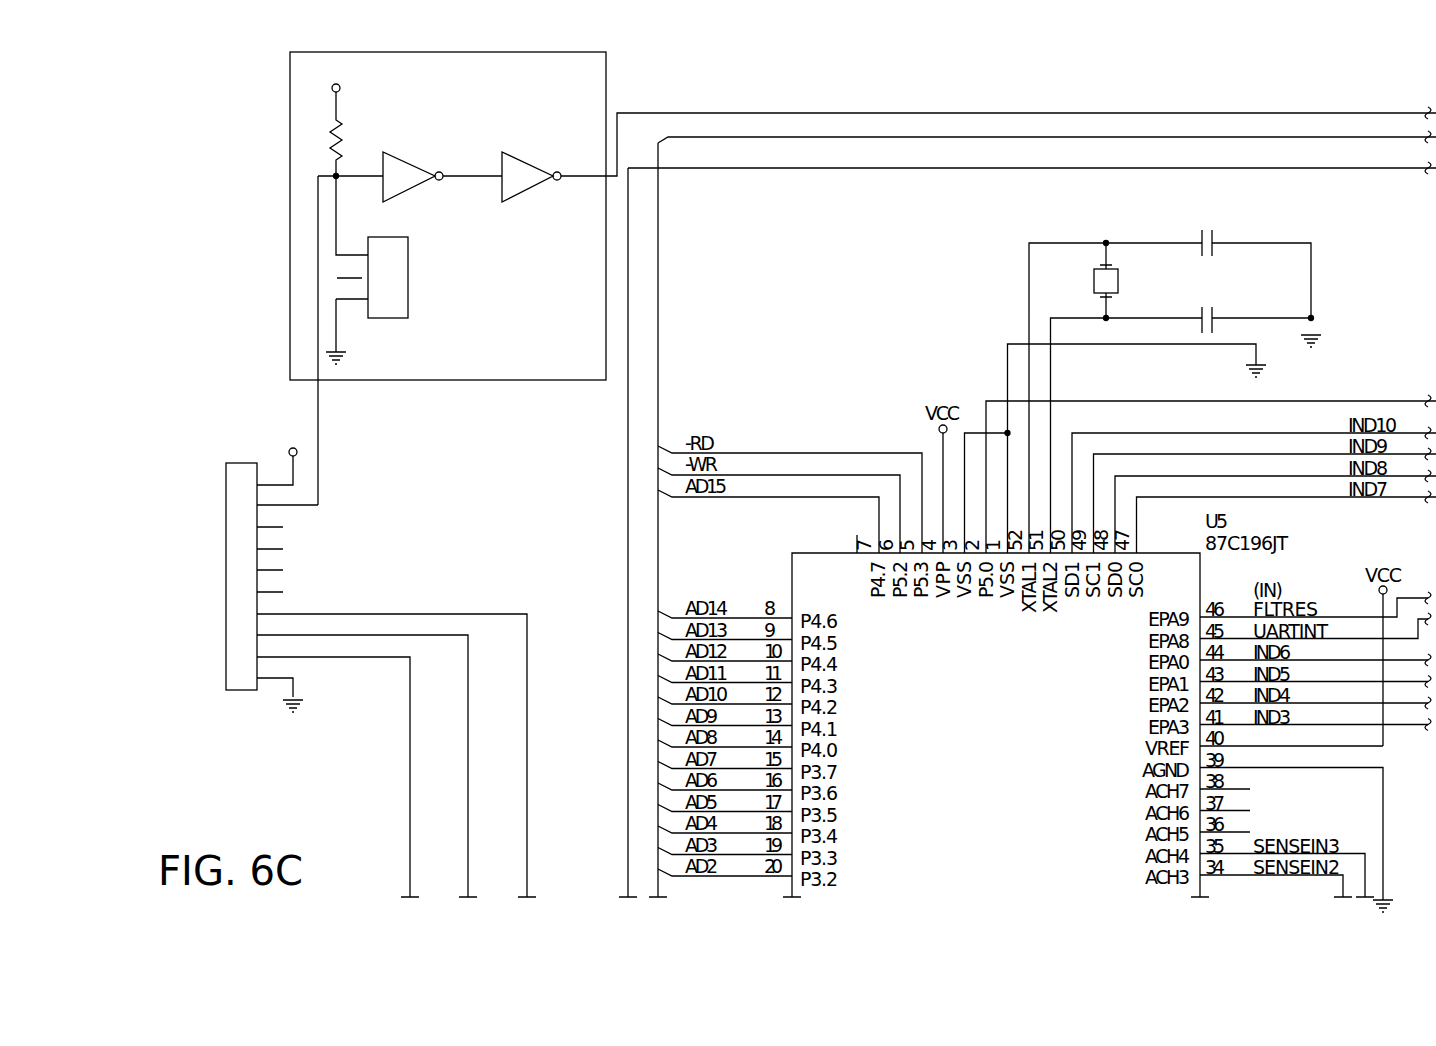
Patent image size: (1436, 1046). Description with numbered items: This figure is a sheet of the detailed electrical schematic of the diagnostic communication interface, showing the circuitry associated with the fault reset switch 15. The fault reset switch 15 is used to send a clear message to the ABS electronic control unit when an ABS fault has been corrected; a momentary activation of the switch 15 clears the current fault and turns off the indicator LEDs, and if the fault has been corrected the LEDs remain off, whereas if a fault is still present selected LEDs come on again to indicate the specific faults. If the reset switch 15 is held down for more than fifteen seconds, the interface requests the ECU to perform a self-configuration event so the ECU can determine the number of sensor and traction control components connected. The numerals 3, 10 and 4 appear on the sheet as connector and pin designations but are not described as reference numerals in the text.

The fault reset switch 15 is at (863, 278).
The header 3 jumper connector J7 3 is at (482, 380).
The CON10 connector J1 10 is at (323, 659).
The crystal oscillator circuit Y1 4 is at (1175, 368).